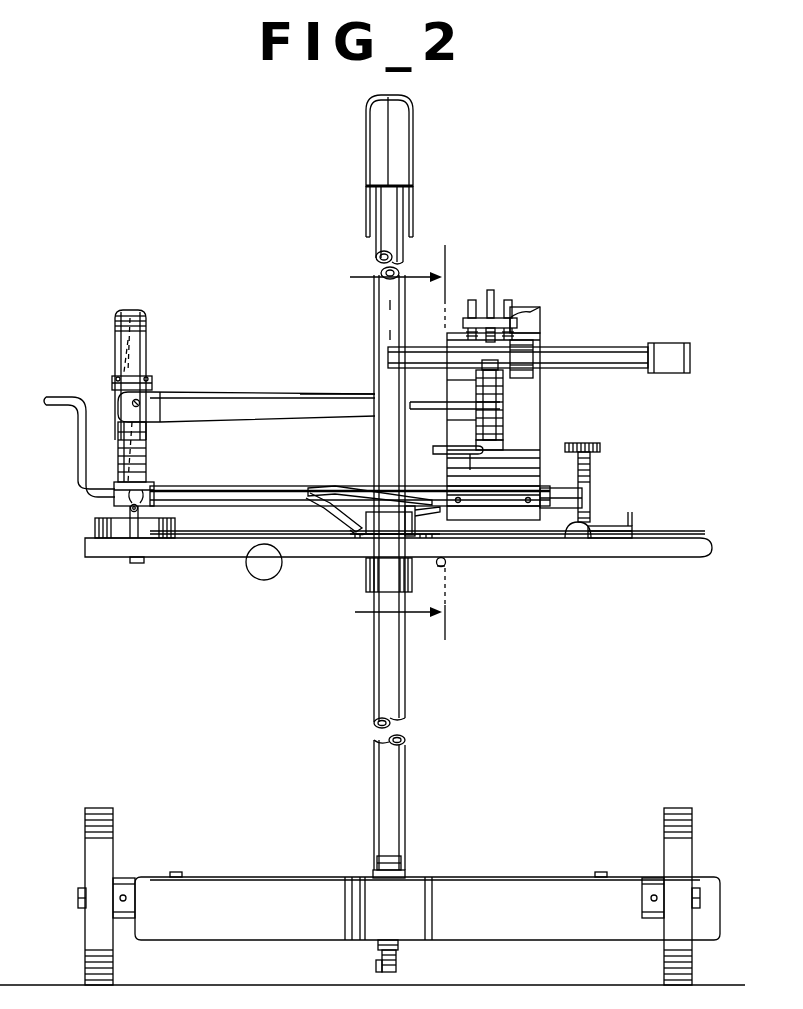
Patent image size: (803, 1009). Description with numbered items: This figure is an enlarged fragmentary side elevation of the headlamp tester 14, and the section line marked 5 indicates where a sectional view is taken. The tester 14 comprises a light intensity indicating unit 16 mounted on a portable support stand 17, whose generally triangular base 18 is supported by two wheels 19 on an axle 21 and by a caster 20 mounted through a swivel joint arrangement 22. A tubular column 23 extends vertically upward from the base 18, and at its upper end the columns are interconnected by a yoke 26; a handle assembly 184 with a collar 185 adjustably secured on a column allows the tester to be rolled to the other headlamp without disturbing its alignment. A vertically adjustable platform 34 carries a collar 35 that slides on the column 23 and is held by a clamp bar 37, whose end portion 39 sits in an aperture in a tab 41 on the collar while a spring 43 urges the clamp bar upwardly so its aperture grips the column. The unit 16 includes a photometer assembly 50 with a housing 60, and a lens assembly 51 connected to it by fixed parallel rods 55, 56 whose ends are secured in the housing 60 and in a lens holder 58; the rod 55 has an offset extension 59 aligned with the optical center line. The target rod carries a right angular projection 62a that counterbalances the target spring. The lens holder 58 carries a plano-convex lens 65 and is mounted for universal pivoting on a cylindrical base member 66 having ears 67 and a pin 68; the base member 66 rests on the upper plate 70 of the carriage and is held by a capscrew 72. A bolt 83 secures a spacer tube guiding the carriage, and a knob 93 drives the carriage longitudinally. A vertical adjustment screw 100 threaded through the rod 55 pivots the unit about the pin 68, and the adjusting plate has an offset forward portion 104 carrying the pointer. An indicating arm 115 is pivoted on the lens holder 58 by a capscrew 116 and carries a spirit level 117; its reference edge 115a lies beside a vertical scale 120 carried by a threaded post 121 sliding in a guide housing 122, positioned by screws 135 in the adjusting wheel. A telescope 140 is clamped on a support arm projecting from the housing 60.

The tester 14 is at (482, 256).
The light intensity indicating unit 16 is at (548, 320).
The portable support stand 17 is at (418, 862).
The base 18 is at (262, 911).
The wheels 19 is at (98, 859).
The caster 20 is at (400, 968).
The axle 21 is at (82, 895).
The swivel joint arrangement 22 is at (405, 943).
The tubular column 23 is at (388, 760).
The yoke 26 is at (403, 117).
The platform 34 is at (600, 549).
The collar 35 is at (384, 578).
The clamp bar 37 is at (348, 498).
The end portion 39 is at (442, 510).
The tab 41 is at (410, 522).
The spring 43 is at (345, 517).
The photometer assembly 50 is at (548, 436).
The lens assembly 51 is at (150, 332).
The rod 55 is at (248, 492).
The rod 56 is at (350, 397).
The lens holder 58 is at (140, 446).
The offset extension 59 is at (83, 445).
The housing 60 is at (536, 452).
The right angular projection 62a is at (440, 450).
The plano-convex lens 65 is at (118, 376).
The cylindrical base member 66 is at (125, 530).
The ears 67 is at (128, 510).
The pin 68 is at (137, 505).
The upper plate 70 is at (200, 526).
The capscrew 72 is at (142, 562).
The bolt 83 is at (446, 566).
The knob 93 is at (264, 567).
The vertical adjustment screw 100 is at (580, 456).
The offset forward portion 104 is at (593, 528).
The indicating arm 115 is at (265, 404).
The reference edge 115a is at (500, 405).
The capscrew 116 is at (142, 400).
The spirit level 117 is at (152, 376).
The vertical scale 120 is at (503, 416).
The threaded post 121 is at (491, 300).
The guide housing 122 is at (500, 384).
The screws 135 is at (494, 318).
The telescope 140 is at (587, 360).
The handle assembly 184 is at (417, 190).
The collar 185 is at (380, 211).
The section line 5 is at (407, 442).